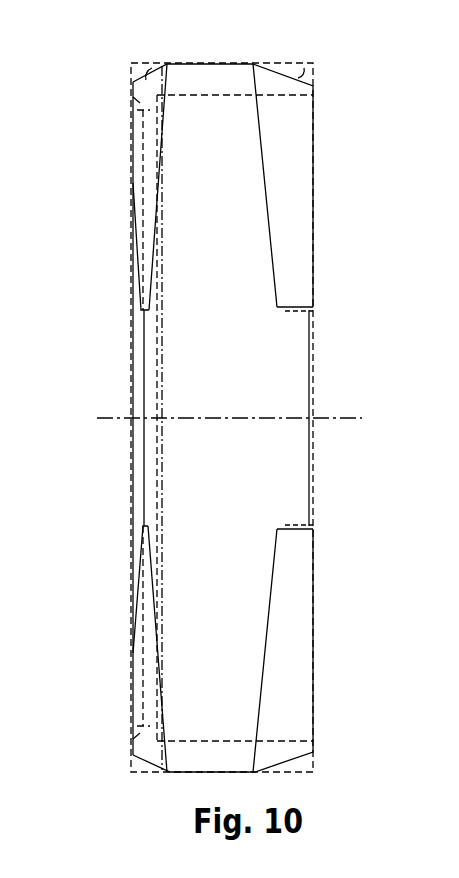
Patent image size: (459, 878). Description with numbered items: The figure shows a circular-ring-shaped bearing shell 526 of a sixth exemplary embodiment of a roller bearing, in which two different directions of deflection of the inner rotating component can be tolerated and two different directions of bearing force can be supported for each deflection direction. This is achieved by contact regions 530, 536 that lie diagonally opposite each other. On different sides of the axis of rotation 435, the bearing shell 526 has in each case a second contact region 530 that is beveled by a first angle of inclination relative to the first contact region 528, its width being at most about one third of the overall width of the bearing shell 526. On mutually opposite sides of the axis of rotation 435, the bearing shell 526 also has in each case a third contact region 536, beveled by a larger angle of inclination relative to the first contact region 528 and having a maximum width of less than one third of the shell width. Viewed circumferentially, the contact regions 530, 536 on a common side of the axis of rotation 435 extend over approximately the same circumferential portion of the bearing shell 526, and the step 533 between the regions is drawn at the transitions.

The bearing shell 526 is at (122, 137).
The first contact region 528 is at (243, 377).
The second contact region 530 is at (307, 160).
The transition step 533 is at (268, 225).
The third contact region 536 is at (147, 172).
The axis of rotation 435 is at (105, 420).